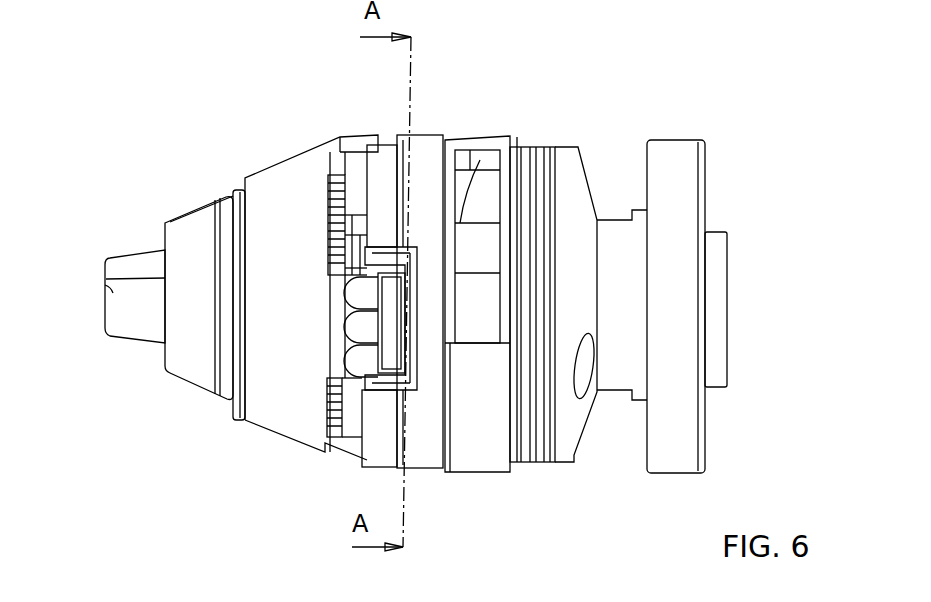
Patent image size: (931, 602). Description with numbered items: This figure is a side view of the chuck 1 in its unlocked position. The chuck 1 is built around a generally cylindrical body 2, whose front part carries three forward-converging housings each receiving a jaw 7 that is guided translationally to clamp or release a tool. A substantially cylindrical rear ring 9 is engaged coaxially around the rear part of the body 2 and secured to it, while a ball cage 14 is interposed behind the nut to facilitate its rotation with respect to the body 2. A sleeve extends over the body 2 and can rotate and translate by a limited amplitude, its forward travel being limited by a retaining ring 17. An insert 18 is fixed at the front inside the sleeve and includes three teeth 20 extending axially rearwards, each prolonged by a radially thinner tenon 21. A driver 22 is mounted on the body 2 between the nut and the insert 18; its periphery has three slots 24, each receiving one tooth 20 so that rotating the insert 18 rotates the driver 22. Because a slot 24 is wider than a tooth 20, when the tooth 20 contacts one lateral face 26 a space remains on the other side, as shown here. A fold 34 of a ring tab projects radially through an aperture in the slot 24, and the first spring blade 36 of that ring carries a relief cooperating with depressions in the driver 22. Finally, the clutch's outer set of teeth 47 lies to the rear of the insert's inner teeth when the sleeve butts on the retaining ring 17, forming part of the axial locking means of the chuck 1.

The chuck 1 is at (760, 381).
The body 2 is at (186, 373).
The jaw 7 is at (108, 326).
The rear ring 9 is at (690, 172).
The ball cage 14 is at (510, 205).
The retaining ring 17 is at (227, 229).
The insert 18 is at (285, 196).
The tooth 20 is at (353, 332).
The tenon 21 is at (397, 332).
The driver 22 is at (462, 436).
The slot 24 is at (408, 240).
The lateral face 26 is at (398, 384).
The fold 34 is at (405, 277).
The first spring blade 36 is at (487, 197).
The outer set of teeth 47 is at (341, 178).